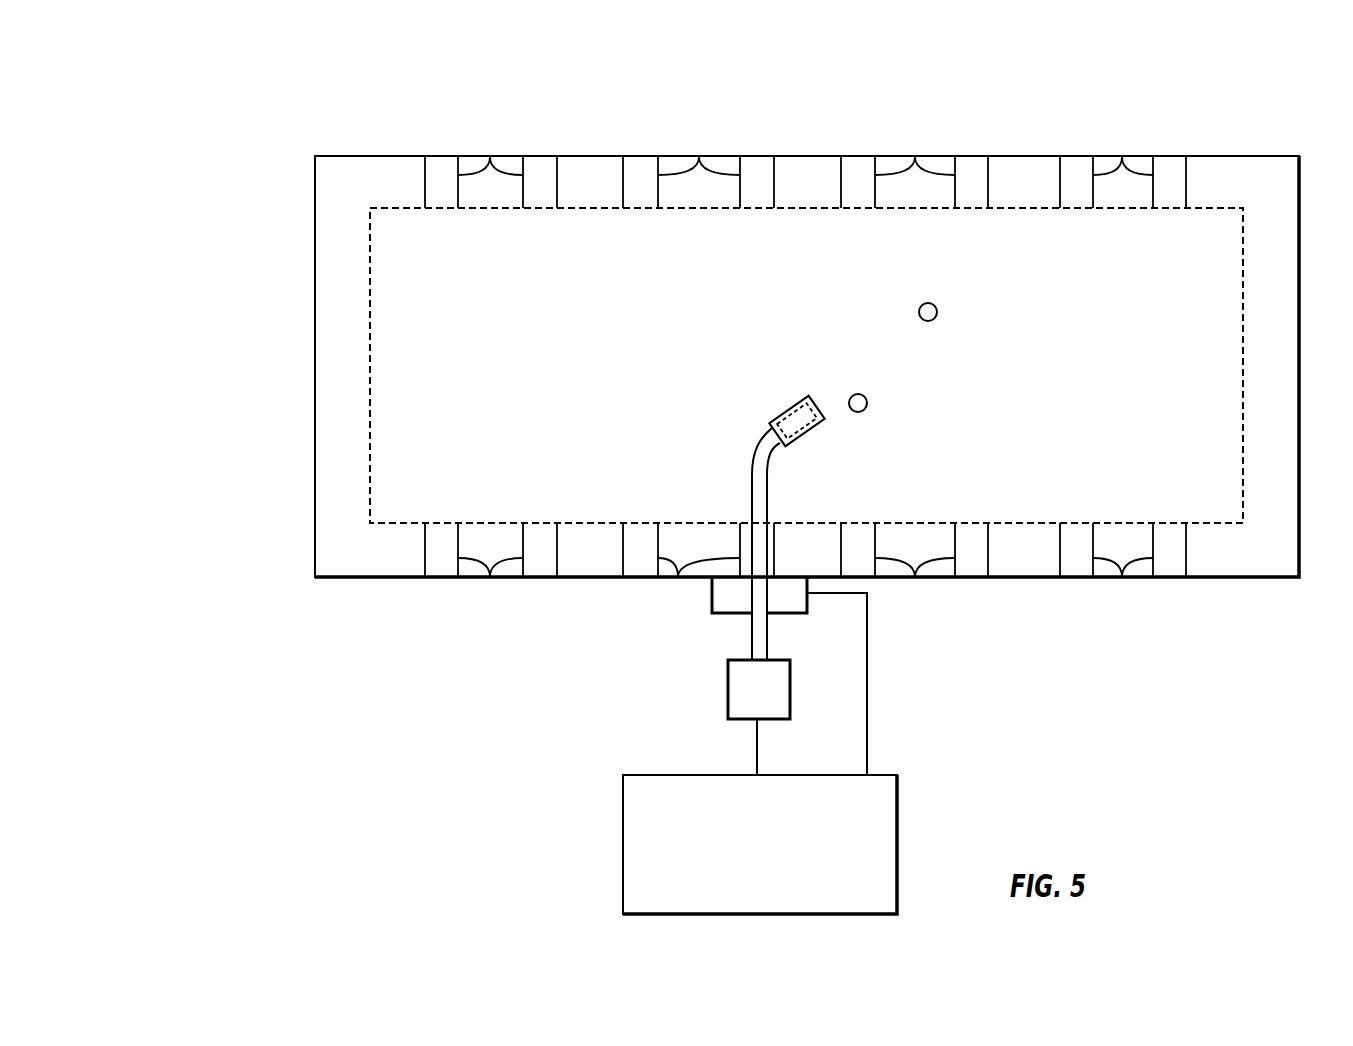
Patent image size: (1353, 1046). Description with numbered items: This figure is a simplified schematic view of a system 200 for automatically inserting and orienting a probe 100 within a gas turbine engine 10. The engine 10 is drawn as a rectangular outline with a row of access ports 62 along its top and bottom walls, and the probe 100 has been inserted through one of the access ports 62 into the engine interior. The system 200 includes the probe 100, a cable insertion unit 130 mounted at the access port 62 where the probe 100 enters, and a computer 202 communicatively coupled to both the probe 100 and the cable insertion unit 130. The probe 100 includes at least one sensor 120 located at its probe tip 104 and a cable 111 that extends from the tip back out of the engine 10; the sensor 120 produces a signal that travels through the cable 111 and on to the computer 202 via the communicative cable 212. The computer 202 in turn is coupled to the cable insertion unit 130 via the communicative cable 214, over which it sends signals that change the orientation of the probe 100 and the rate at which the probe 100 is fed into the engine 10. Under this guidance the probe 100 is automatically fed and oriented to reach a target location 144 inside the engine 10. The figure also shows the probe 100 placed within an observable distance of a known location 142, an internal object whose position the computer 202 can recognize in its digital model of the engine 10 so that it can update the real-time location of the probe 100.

The system 200 is at (224, 140).
The gas turbine engine 10 is at (793, 367).
The access port 62 is at (490, 157).
The probe 100 is at (728, 492).
The probe tip 104 is at (790, 385).
The sensor 120 is at (800, 397).
The known location 142 is at (867, 402).
The target location 144 is at (937, 310).
The cable 111 is at (752, 633).
The cable insertion unit 130 is at (795, 615).
The communicative cable 212 is at (800, 747).
The communicative cable 214 is at (867, 708).
The computer 202 is at (612, 827).